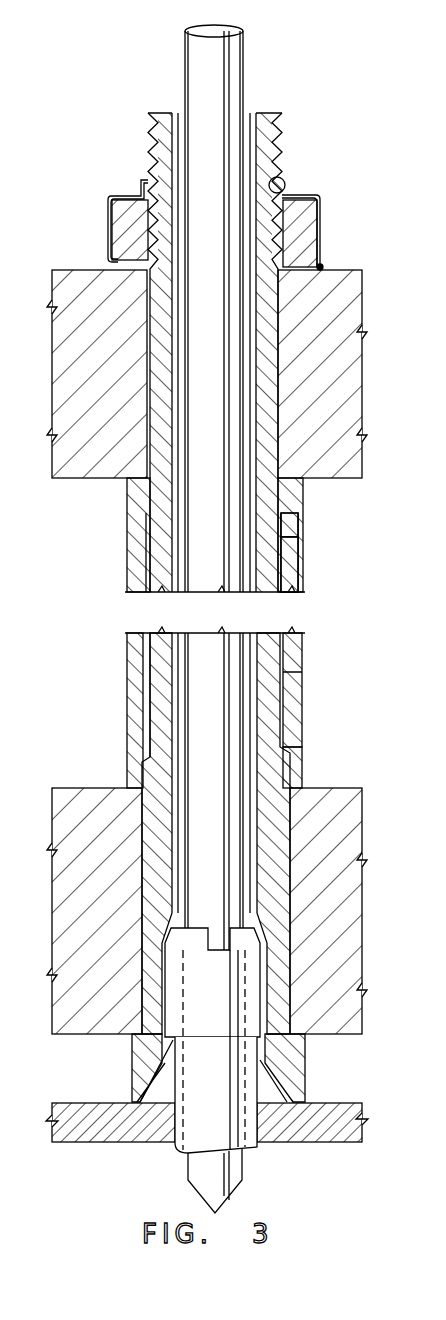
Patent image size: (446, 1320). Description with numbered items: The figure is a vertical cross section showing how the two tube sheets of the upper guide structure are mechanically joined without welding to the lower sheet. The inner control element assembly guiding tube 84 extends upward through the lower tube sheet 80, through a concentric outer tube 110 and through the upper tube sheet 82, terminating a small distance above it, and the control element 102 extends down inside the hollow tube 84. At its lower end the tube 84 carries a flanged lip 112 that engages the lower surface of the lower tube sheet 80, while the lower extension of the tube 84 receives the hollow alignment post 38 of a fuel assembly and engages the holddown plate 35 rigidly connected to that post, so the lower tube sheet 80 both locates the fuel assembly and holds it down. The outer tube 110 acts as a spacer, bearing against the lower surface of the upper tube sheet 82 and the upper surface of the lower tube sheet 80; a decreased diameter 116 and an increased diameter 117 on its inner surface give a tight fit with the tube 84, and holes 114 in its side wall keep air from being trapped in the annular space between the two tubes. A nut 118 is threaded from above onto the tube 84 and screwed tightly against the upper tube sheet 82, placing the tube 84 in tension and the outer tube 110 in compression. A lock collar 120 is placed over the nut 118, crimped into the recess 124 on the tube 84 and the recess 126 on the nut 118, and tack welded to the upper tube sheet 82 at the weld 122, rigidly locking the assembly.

The holddown plate 35 is at (343, 1108).
The hollow alignment post 38 is at (198, 1142).
The lower tube sheet 80 is at (340, 832).
The upper tube sheet 82 is at (350, 375).
The control element assembly guiding tube 84 is at (272, 122).
The control element 102 is at (196, 706).
The concentric outer tube 110 is at (290, 525).
The flanged lip 112 is at (300, 1050).
The holes 114 is at (292, 556).
The decreased diameter 116 is at (282, 495).
The increased diameter 117 is at (292, 768).
The nut 118 is at (300, 225).
The lock collar 120 is at (300, 195).
The tack weld 122 is at (322, 268).
The recess 124 is at (285, 183).
The recess 126 is at (110, 258).